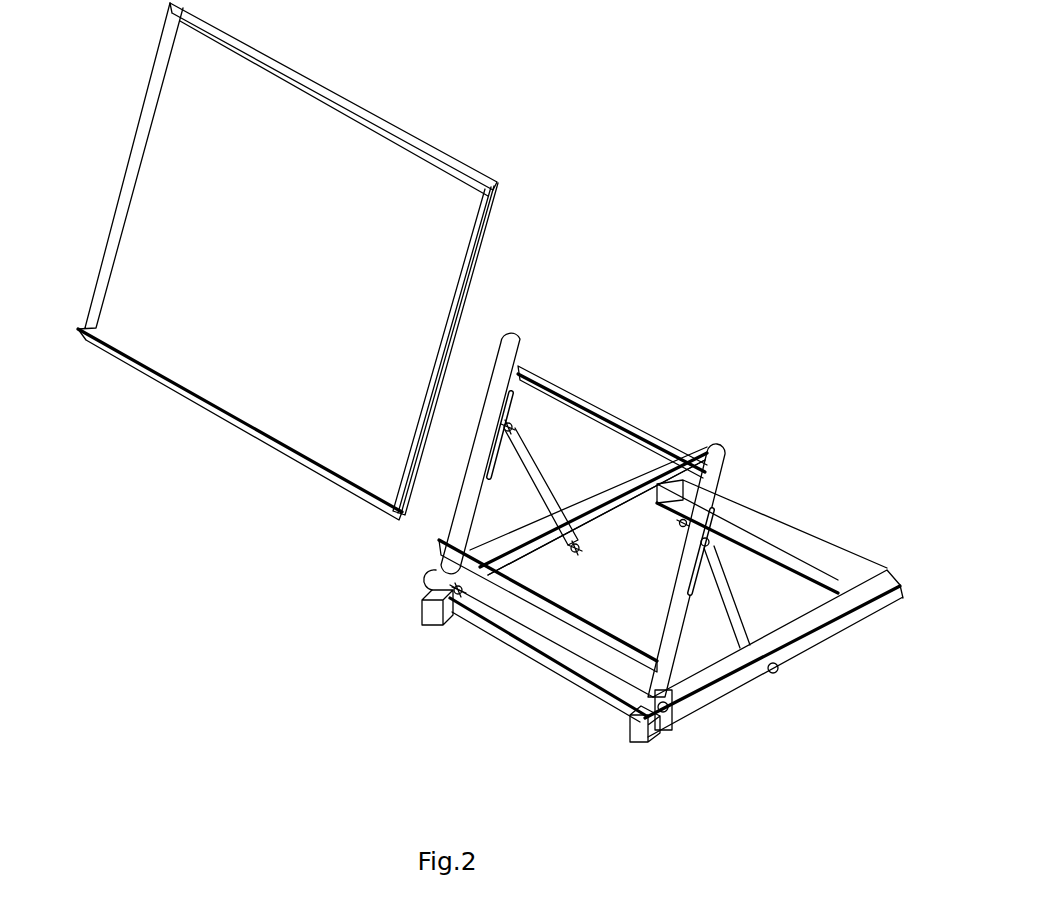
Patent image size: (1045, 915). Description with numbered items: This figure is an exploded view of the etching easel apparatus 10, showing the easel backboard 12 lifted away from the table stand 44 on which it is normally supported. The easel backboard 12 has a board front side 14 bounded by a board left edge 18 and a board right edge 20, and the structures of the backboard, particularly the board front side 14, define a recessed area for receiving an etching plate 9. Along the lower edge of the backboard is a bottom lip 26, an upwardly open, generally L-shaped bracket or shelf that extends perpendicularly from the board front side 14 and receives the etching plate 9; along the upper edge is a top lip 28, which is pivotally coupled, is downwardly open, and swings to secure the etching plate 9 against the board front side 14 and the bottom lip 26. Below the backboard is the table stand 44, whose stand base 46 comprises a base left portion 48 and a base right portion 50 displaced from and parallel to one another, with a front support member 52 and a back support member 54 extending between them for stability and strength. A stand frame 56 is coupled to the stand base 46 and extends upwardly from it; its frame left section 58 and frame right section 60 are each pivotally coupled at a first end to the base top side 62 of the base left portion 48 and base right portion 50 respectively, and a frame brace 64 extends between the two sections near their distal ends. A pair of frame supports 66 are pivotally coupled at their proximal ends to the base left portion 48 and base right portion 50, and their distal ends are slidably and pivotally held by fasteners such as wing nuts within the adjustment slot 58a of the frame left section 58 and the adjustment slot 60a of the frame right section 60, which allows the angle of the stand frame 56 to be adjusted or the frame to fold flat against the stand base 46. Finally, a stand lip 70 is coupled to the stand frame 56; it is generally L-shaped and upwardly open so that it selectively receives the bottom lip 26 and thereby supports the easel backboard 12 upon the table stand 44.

The etching easel apparatus 10 is at (583, 95).
The easel backboard 12 is at (289, 261).
The etching plate 9 is at (278, 236).
The board front side 14 is at (452, 304).
The board left edge 18 is at (117, 199).
The board right edge 20 is at (474, 262).
The bottom lip 26 is at (122, 357).
The top lip 28 is at (347, 110).
The table stand 44 is at (684, 659).
The stand base 46 is at (799, 670).
The base left portion 48 is at (613, 517).
The base right portion 50 is at (846, 628).
The front support member 52 is at (487, 628).
The back support member 54 is at (835, 577).
The stand frame 56 is at (590, 499).
The frame left section 58 is at (507, 362).
The adjustment slot 58a is at (483, 475).
The frame right section 60 is at (722, 471).
The adjustment slot 60a is at (709, 540).
The base top side 62 is at (617, 495).
The frame brace 64 is at (602, 412).
The frame supports 66 is at (730, 605).
The stand lip 70 is at (580, 623).